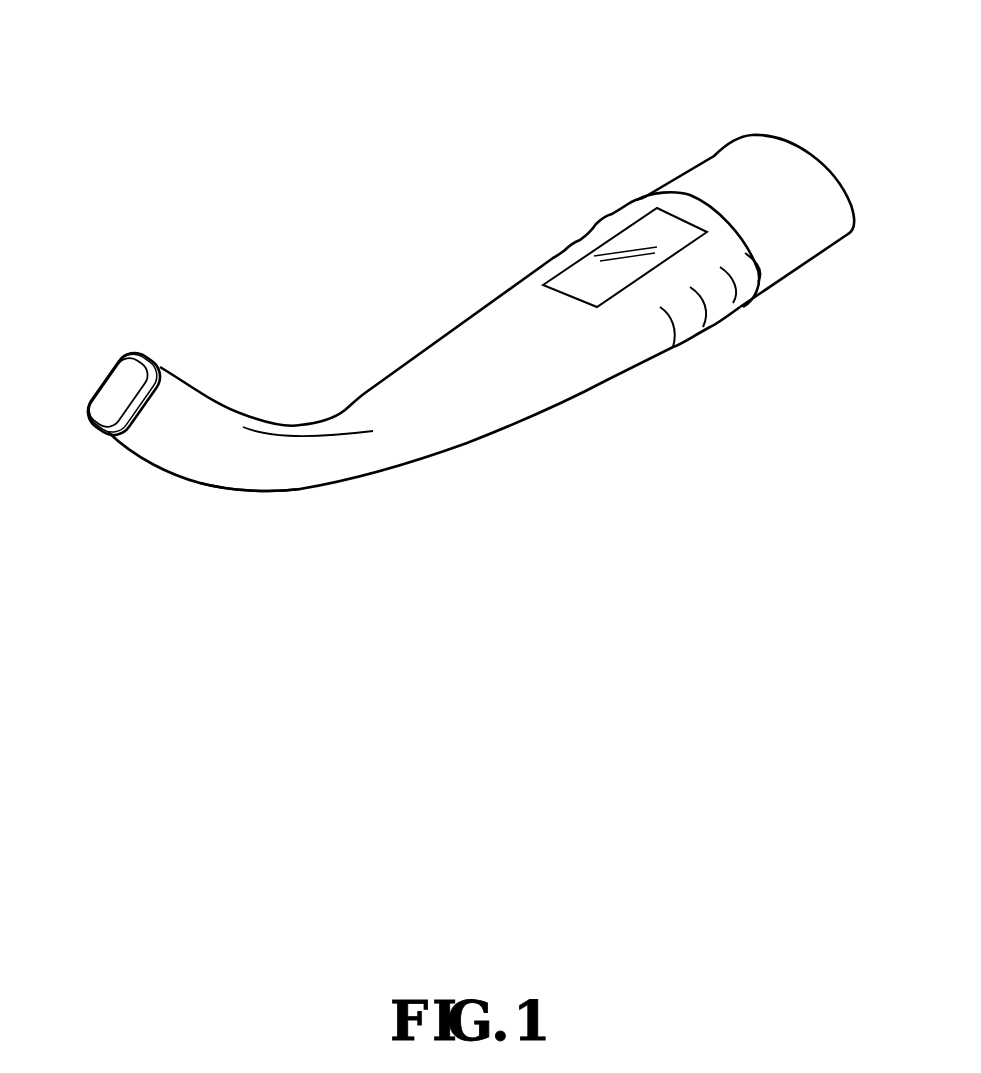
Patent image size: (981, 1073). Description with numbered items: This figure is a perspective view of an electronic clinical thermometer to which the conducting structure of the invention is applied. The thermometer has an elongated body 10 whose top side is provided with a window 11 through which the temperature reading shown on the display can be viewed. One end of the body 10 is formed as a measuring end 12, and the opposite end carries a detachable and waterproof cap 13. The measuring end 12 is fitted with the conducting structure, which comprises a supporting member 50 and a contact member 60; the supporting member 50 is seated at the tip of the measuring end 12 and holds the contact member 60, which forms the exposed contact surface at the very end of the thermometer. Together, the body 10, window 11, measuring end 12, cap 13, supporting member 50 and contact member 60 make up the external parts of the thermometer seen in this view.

The body 10 is at (461, 296).
The window 11 is at (637, 237).
The measuring end 12 is at (212, 460).
The cap 13 is at (786, 183).
The supporting member 50 is at (157, 360).
The contact member 60 is at (110, 383).